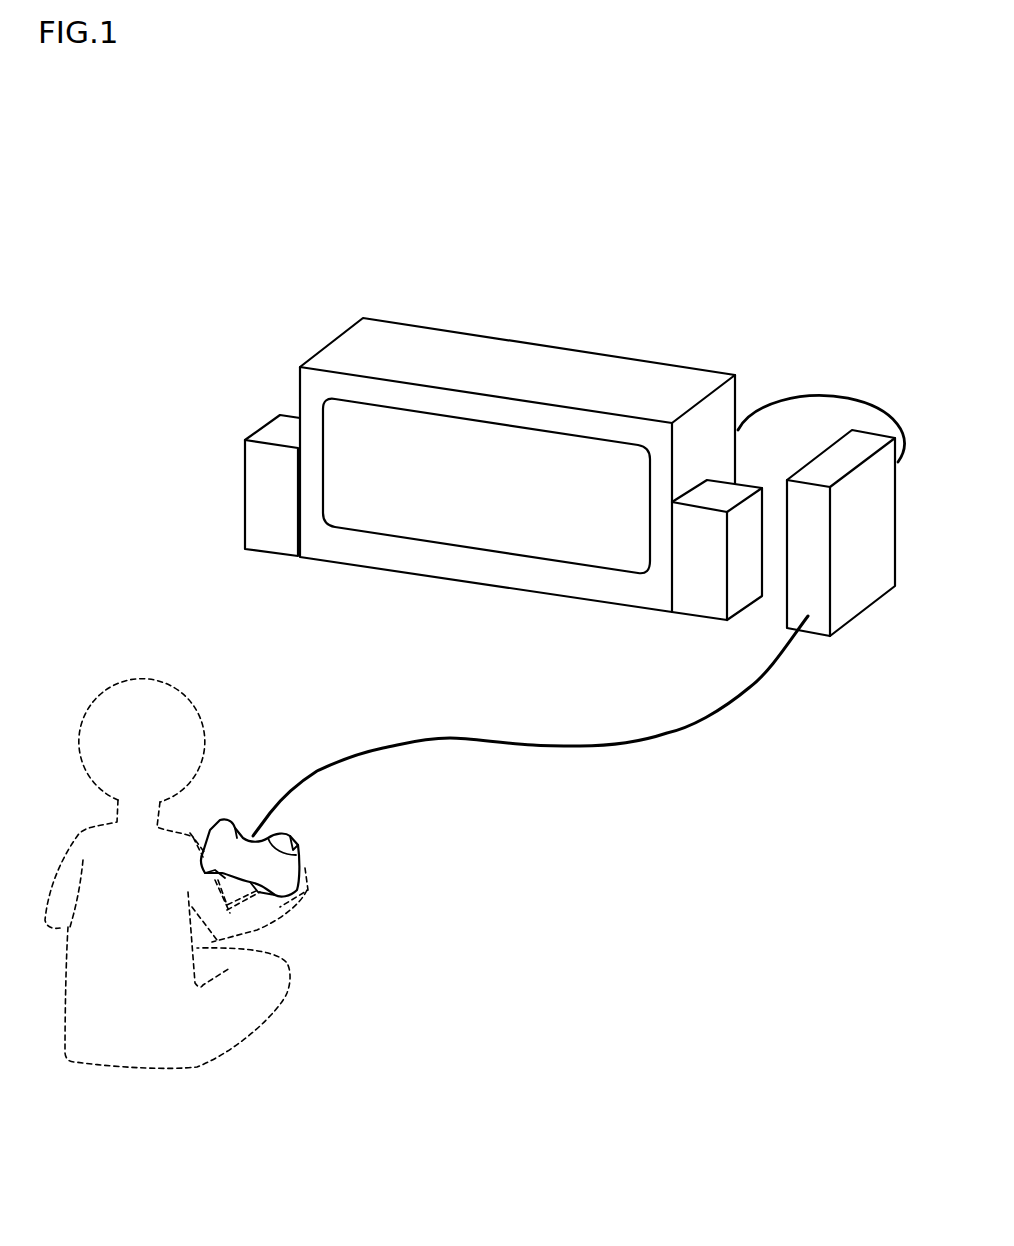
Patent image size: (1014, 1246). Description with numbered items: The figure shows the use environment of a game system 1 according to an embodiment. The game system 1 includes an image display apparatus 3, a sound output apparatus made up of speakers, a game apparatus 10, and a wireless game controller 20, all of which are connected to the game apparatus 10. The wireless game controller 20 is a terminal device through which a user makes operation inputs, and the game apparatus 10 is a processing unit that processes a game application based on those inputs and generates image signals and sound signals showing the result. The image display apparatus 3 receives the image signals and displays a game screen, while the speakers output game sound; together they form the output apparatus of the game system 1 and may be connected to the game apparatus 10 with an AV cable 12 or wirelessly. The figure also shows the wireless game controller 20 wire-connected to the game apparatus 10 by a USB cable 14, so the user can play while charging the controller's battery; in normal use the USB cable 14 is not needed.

The game system 1 is at (728, 216).
The image display apparatus 3 is at (487, 583).
The game apparatus 10 is at (843, 608).
The AV cable 12 is at (850, 398).
The USB cable 14 is at (607, 745).
The wireless game controller 20 is at (302, 853).